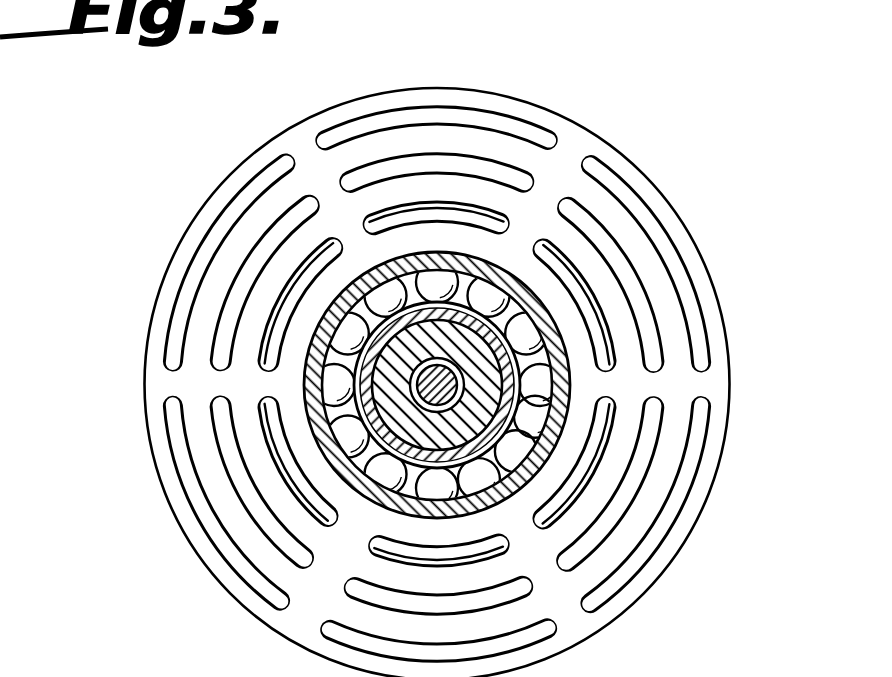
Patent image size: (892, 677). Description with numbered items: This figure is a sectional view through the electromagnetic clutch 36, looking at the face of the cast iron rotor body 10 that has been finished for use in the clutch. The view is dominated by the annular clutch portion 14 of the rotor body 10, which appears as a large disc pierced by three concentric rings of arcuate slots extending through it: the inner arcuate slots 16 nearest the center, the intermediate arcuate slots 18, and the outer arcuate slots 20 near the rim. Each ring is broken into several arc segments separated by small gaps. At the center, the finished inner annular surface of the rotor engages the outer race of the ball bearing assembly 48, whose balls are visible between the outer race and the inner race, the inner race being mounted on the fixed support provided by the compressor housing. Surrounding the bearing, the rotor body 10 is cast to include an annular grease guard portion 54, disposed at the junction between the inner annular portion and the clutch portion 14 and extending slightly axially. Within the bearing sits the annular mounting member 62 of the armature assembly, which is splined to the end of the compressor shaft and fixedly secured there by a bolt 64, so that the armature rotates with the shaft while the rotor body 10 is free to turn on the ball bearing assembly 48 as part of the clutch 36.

The cast iron rotor body 10 is at (636, 160).
The annular clutch portion 14 is at (683, 383).
The inner arcuate slots 16 is at (542, 520).
The intermediate arcuate slots 18 is at (308, 561).
The outer arcuate slots 20 is at (165, 371).
The electromagnetic clutch 36 is at (166, 226).
The ball bearing assembly 48 is at (335, 465).
The annular grease guard portion 54 is at (500, 272).
The annular mounting member 62 is at (300, 380).
The bolt 64 is at (300, 380).